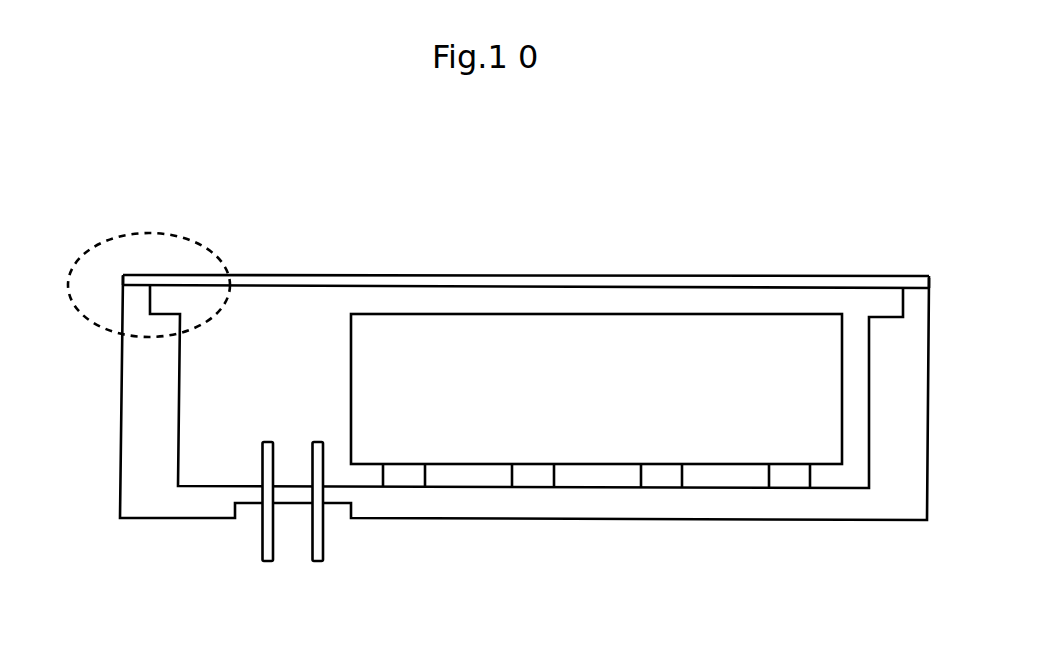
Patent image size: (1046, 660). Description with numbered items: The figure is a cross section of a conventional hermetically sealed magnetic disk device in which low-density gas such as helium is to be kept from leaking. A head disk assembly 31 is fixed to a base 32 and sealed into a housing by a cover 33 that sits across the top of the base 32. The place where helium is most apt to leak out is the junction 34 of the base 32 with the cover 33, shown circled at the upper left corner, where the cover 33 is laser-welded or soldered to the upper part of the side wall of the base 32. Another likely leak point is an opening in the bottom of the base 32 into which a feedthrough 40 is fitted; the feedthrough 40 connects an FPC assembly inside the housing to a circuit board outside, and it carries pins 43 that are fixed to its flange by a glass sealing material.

The head disk assembly 31 is at (351, 383).
The base 32 is at (595, 520).
The cover 33 is at (506, 275).
The junction 34 is at (149, 235).
The feedthrough 40 is at (293, 534).
The pins 43 is at (256, 541).